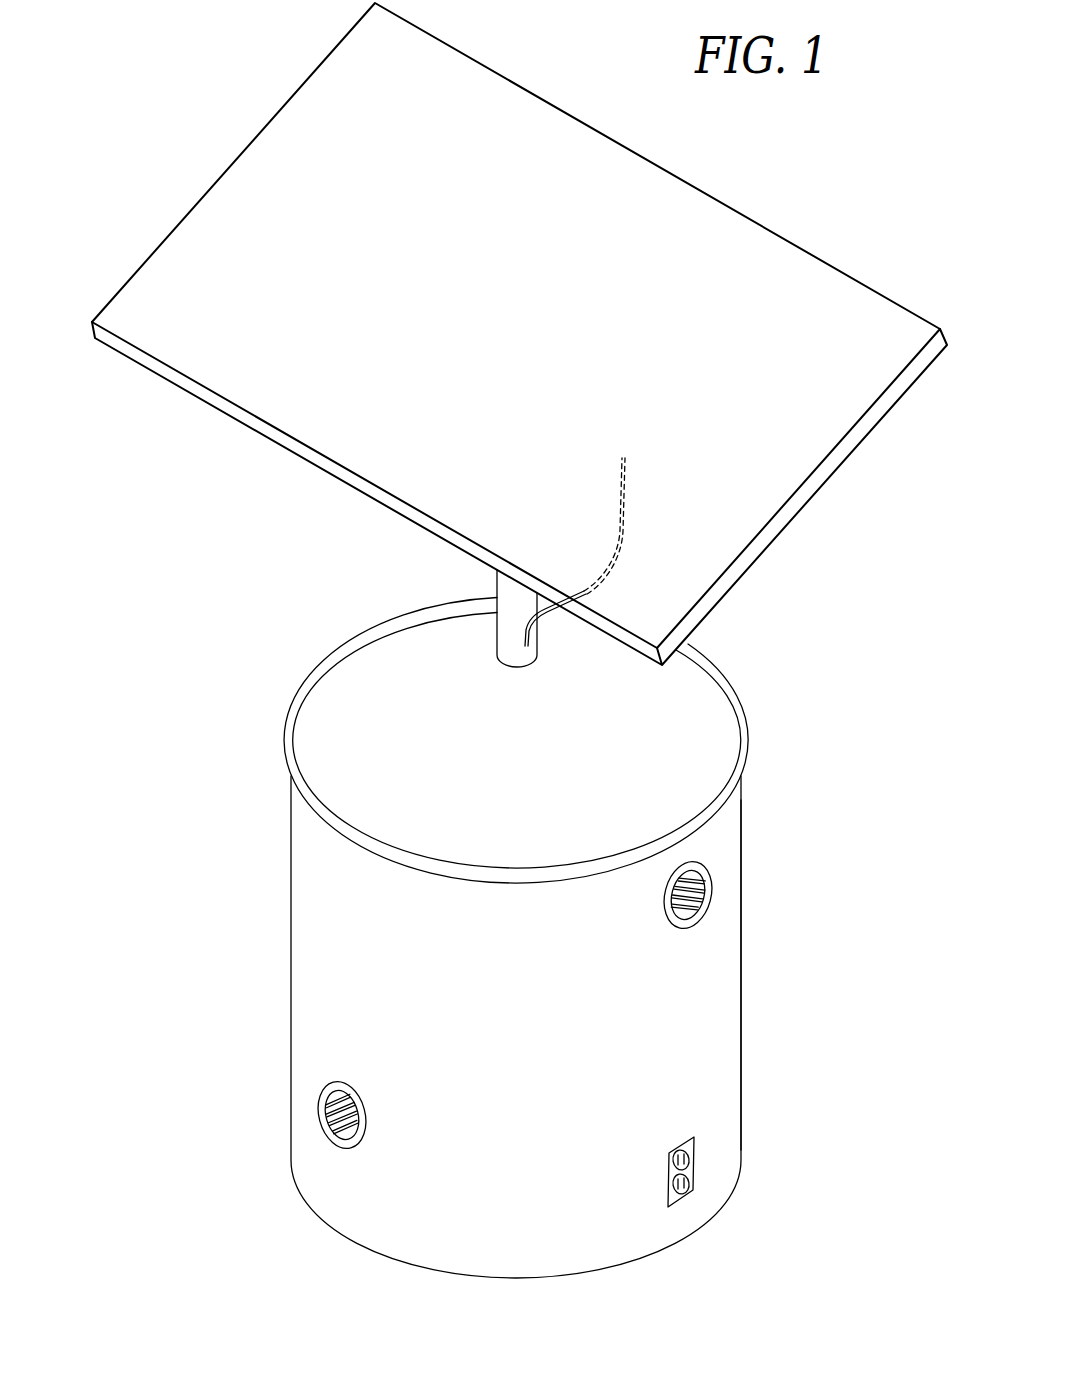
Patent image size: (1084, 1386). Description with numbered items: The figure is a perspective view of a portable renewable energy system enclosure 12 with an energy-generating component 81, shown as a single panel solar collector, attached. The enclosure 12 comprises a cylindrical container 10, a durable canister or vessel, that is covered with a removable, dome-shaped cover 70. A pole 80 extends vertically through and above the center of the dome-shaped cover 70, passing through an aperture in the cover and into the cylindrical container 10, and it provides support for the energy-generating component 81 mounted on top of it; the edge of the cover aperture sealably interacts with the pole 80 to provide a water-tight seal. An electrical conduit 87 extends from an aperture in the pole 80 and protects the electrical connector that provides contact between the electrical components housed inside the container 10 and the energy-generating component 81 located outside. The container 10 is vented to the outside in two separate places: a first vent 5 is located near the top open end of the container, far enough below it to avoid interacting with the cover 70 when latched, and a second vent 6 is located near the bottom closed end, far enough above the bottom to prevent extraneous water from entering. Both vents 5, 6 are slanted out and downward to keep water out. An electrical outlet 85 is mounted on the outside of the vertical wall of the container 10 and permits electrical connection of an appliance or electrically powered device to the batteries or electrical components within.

The energy-generating component 81 is at (768, 570).
The pole 80 is at (503, 607).
The electrical conduit 87 is at (525, 630).
The dome-shaped cover 70 is at (703, 722).
The cylindrical container 10 is at (722, 1083).
The enclosure 12 is at (752, 973).
The first vent 5 is at (690, 892).
The second vent 6 is at (328, 1102).
The electrical outlet 85 is at (686, 1166).